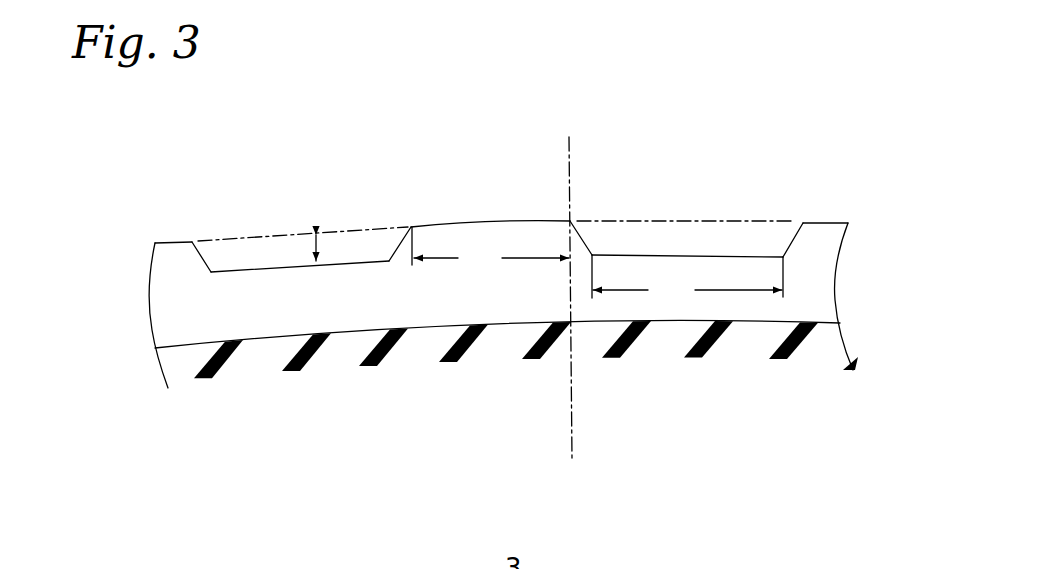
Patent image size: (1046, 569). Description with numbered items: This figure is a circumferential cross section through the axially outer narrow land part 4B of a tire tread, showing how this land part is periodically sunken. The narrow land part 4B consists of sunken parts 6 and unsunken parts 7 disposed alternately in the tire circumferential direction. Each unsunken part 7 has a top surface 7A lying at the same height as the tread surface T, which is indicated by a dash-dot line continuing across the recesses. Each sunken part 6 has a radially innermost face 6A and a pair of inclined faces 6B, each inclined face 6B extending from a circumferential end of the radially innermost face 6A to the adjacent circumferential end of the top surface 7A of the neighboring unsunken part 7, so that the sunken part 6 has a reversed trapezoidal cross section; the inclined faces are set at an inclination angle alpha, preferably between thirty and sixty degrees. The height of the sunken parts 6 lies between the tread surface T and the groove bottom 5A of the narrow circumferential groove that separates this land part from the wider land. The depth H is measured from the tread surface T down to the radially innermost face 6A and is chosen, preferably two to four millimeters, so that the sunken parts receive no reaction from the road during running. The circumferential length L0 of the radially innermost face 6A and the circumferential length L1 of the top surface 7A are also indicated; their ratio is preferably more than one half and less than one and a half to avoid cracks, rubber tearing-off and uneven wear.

The narrow land part 4B is at (163, 308).
The groove bottom 5A is at (827, 322).
The sunken part 6 is at (465, 149).
The radially innermost face 6A is at (237, 271).
The inclined face 6B is at (803, 74).
The unsunken part 7 is at (501, 160).
The top surface 7A is at (452, 222).
The tread surface T is at (283, 233).
The depth of the sunken parts H is at (318, 250).
The circumferential length of the top surface L1 is at (490, 249).
The length of the radially innermost face L0 is at (687, 279).